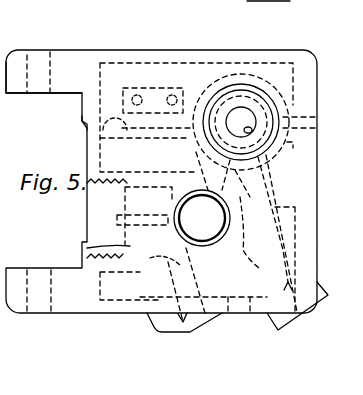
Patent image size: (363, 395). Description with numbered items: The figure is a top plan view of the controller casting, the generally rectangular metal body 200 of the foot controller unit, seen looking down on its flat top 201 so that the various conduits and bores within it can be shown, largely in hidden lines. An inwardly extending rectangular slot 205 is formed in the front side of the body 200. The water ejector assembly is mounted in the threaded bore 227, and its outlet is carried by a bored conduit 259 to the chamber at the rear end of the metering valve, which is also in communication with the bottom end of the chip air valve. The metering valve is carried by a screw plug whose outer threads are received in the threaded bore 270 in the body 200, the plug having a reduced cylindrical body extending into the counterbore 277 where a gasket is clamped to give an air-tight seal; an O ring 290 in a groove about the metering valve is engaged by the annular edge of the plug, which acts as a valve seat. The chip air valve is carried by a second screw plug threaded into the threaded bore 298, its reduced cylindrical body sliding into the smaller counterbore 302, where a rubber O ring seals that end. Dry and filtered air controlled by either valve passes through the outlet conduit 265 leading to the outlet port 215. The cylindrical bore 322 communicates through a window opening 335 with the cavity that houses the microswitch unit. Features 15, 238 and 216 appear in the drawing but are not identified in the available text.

The metal body 200 is at (88, 0).
The flat top 201 is at (294, 0).
The rectangular slot 205 is at (62, 100).
The window opening 335 is at (86, 124).
The bore 15 is at (146, 128).
The cylindrical bore 322 is at (172, 145).
The threaded bore 227 is at (260, 92).
The pilot port 238 is at (250, 132).
The O ring 290 is at (290, 196).
The bored conduit 259 is at (227, 185).
The smaller counterbore 302 is at (181, 198).
The threaded bore 270 is at (97, 190).
The threaded bore 298 is at (180, 234).
The counterbore 277 is at (87, 247).
The passage 216 is at (259, 233).
The outlet conduit 265 is at (183, 285).
The outlet port 215 is at (150, 293).